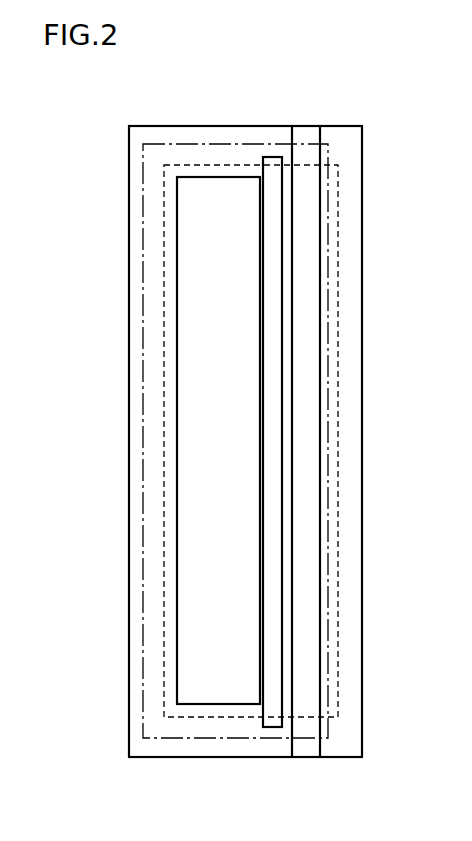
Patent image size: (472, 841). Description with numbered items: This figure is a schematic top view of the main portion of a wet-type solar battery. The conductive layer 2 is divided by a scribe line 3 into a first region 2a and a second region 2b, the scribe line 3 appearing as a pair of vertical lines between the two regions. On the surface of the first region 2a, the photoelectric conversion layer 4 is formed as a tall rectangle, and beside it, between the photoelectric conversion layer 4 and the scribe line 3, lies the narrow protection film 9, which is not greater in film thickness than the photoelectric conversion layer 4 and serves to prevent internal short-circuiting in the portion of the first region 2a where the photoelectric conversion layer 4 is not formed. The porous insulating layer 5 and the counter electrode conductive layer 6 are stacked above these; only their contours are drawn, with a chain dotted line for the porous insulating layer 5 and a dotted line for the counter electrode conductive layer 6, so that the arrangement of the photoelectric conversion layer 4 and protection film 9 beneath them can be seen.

The conductive layer 2 is at (362, 79).
The first region 2a is at (225, 134).
The second region 2b is at (339, 135).
The scribe line 3 is at (307, 748).
The photoelectric conversion layer 4 is at (200, 432).
The porous insulating layer 5 is at (329, 340).
The counter electrode conductive layer 6 is at (339, 285).
The protection film 9 is at (273, 477).